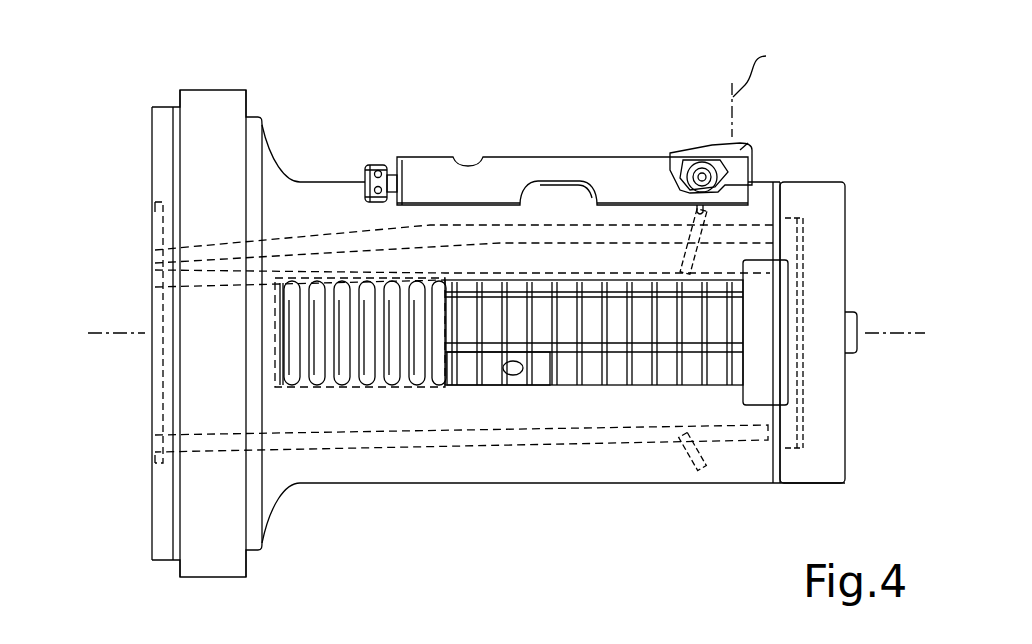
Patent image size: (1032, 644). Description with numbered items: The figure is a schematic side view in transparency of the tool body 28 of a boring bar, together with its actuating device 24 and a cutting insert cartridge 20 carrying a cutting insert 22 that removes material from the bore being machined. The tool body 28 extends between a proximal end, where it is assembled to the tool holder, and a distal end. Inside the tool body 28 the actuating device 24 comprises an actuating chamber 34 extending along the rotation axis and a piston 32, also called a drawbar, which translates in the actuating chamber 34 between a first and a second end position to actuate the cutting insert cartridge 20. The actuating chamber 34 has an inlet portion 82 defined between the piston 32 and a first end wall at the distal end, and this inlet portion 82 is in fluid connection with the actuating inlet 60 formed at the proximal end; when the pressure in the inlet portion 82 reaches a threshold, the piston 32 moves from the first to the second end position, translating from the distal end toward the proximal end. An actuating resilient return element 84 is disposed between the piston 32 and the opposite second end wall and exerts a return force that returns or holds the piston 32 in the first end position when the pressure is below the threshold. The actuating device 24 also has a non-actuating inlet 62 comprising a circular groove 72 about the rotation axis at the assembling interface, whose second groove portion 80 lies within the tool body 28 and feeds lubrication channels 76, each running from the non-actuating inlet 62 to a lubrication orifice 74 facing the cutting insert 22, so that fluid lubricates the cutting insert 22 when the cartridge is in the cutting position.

The cutting insert cartridge 20 is at (569, 165).
The cutting insert 22 is at (742, 165).
The actuating device 24 is at (458, 468).
The tool body 28 is at (538, 492).
The piston 32 is at (615, 370).
The actuating chamber 34 is at (395, 387).
The actuating inlet 60 is at (158, 258).
The non-actuating inlet 62 is at (152, 447).
The circular groove 72 is at (128, 146).
The lubrication orifice 74 is at (701, 176).
The lubrication channel 76 is at (728, 232).
The second groove portion 80 is at (158, 226).
The inlet portion 82 is at (795, 296).
The actuating resilient return element 84 is at (317, 280).